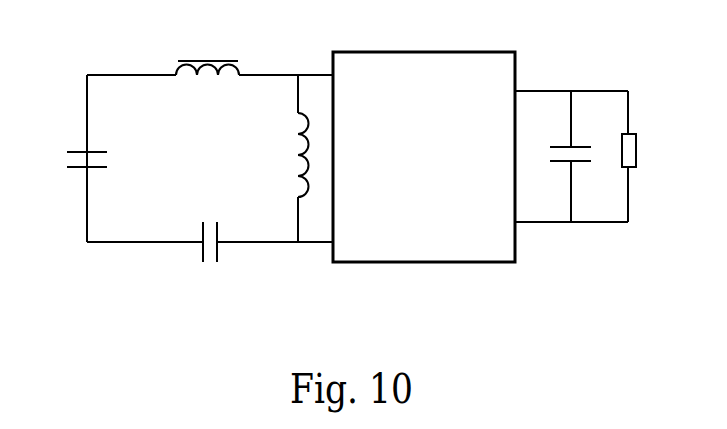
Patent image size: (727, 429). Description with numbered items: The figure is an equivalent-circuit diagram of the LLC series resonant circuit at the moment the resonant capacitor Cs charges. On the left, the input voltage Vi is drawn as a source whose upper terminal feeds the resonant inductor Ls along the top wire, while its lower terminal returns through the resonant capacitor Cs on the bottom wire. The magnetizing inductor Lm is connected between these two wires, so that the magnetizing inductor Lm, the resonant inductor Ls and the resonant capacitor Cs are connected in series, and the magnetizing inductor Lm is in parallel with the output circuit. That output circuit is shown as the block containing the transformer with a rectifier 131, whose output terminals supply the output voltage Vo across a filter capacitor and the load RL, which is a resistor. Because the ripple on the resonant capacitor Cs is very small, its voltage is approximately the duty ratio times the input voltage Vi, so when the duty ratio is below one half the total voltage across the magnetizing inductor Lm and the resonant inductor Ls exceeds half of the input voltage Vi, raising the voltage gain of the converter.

The transformer with a rectifier 131 is at (398, 186).
The input voltage Vi is at (75, 158).
The resonant inductor Ls is at (210, 49).
The magnetizing inductor Lm is at (277, 158).
The resonant capacitor Cs is at (210, 251).
The output voltage Vo is at (575, 141).
The load RL is at (647, 156).